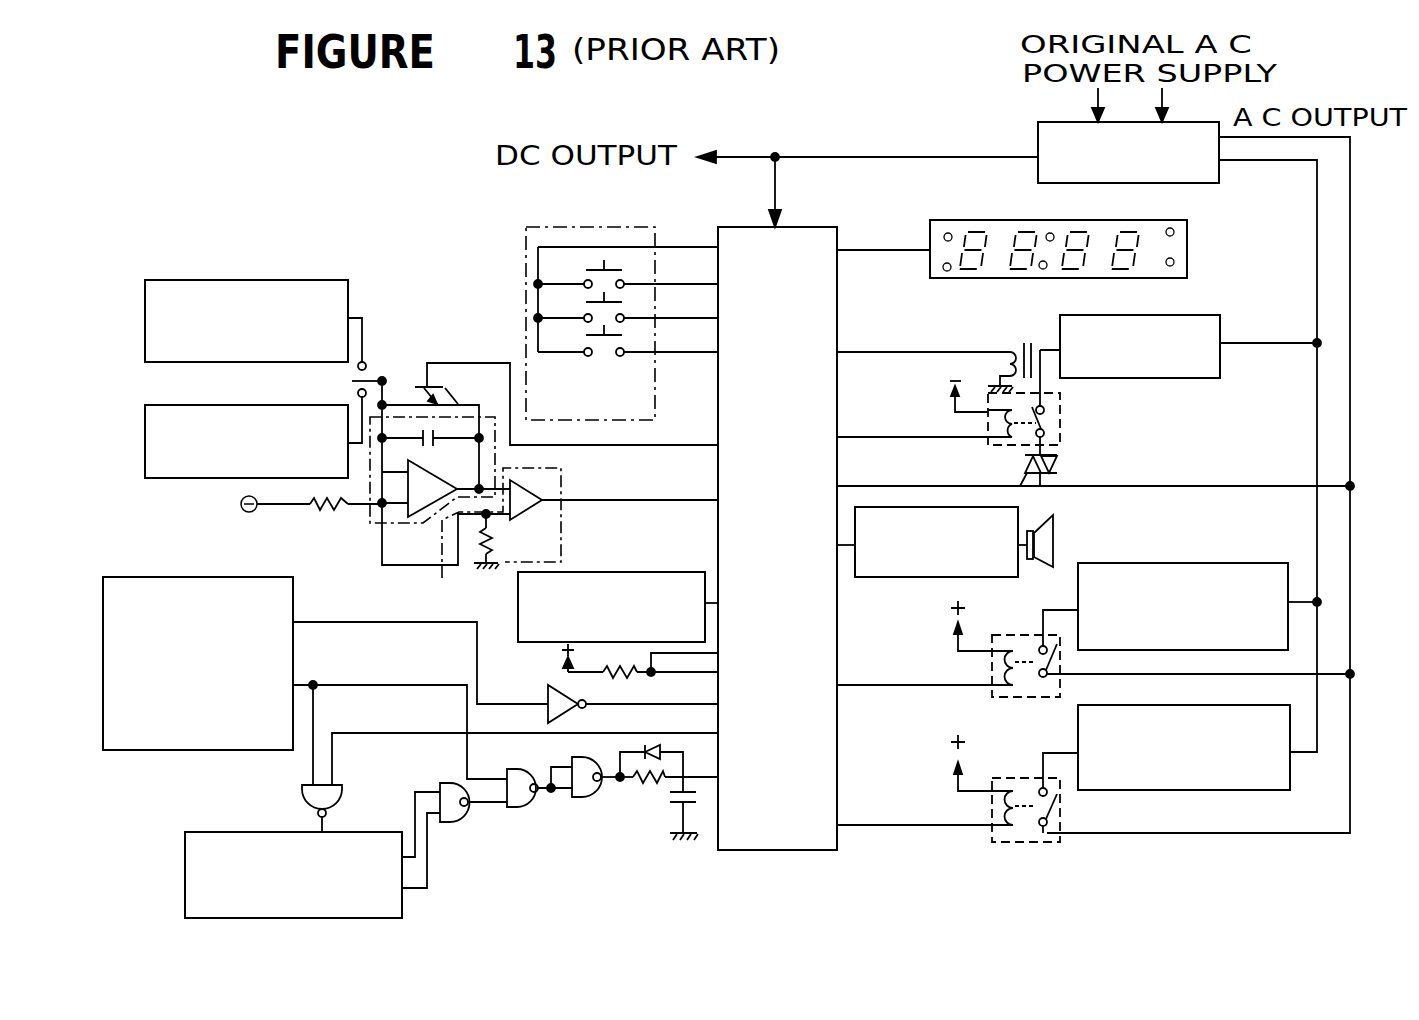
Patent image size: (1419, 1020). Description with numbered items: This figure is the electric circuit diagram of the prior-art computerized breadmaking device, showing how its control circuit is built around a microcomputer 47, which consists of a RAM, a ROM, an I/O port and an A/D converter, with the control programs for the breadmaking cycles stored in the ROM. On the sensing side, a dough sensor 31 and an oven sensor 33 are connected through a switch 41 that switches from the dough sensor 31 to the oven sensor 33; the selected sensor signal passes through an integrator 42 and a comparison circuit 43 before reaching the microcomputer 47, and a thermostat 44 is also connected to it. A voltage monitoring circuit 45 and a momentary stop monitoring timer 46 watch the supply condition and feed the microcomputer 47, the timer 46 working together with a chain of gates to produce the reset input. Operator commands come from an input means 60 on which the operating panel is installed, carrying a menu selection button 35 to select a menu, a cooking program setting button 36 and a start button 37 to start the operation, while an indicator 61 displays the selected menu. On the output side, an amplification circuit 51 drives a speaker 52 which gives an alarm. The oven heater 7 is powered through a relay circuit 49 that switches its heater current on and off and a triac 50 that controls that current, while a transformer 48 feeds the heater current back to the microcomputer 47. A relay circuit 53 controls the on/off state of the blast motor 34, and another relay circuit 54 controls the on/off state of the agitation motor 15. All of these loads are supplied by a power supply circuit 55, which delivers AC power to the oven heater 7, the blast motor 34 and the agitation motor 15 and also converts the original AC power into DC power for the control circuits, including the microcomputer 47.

The oven heater 7 is at (1200, 315).
The agitation motor 15 is at (1237, 790).
The dough sensor 31 is at (172, 280).
The oven sensor 33 is at (148, 470).
The blast motor 34 is at (1250, 563).
The menu selection button 35 is at (620, 270).
The cooking program setting button 36 is at (620, 302).
The start button 37 is at (620, 335).
The switch 41 is at (376, 376).
The integrator 42 is at (378, 525).
The comparison circuit 43 is at (561, 492).
The thermostat 44 is at (648, 574).
The voltage monitoring circuit 45 is at (122, 750).
The momentary stop monitoring timer 46 is at (185, 858).
The microcomputer 47 is at (795, 266).
The transformer 48 is at (1030, 345).
The relay circuit 49 is at (1062, 403).
The triac 50 is at (1062, 460).
The amplification circuit 51 is at (880, 577).
The speaker 52 is at (1055, 532).
The relay circuit 53 is at (1020, 635).
The relay circuit 54 is at (1025, 843).
The power supply circuit 55 is at (1133, 171).
The input means 60 is at (585, 307).
The indicator 61 is at (1187, 232).